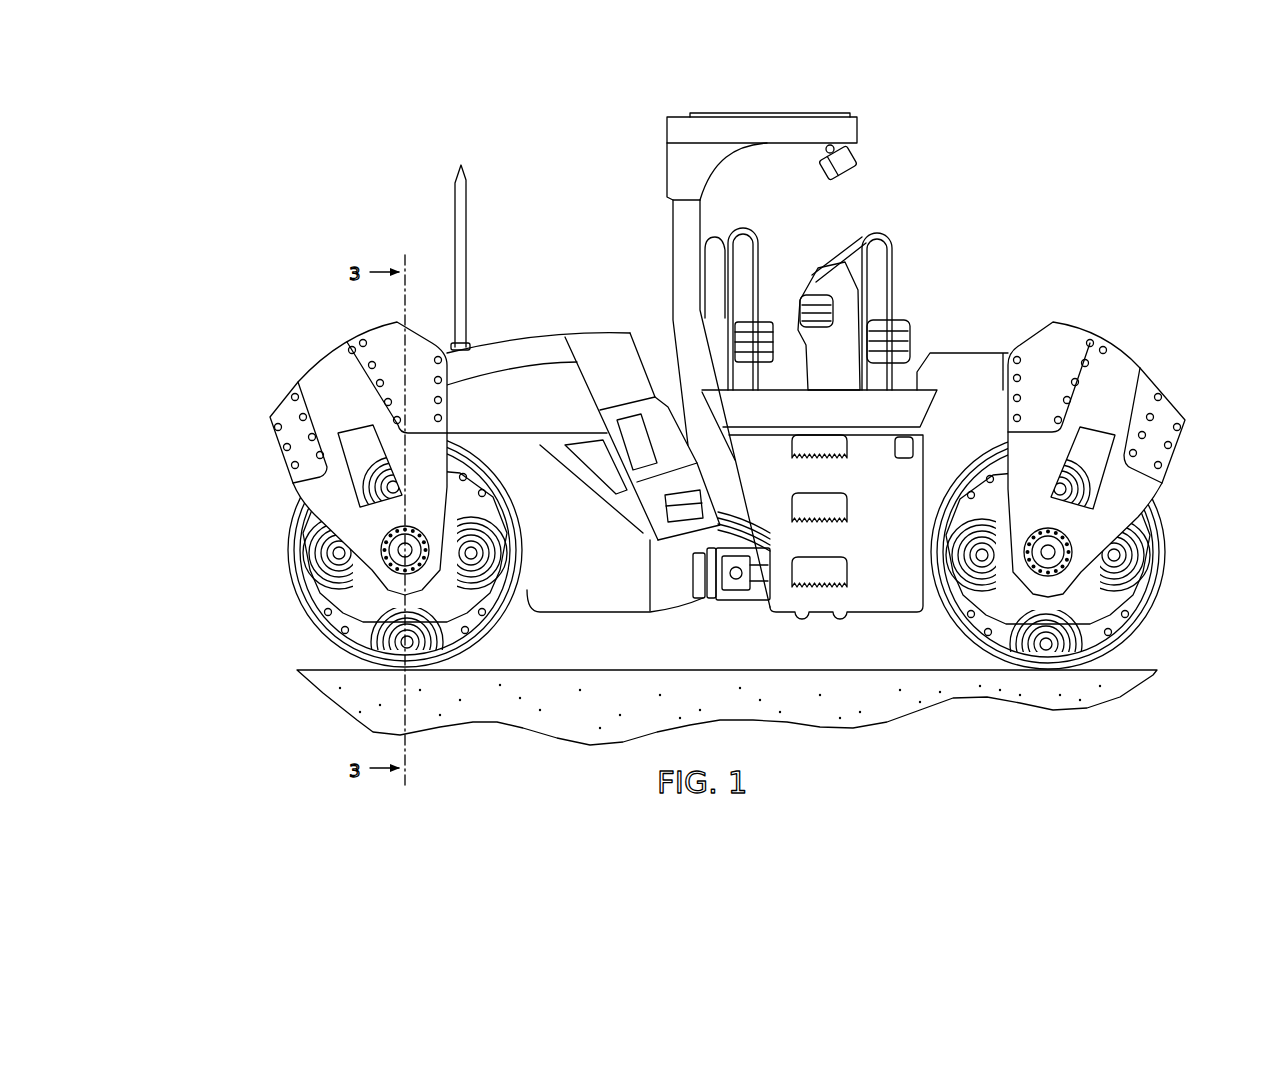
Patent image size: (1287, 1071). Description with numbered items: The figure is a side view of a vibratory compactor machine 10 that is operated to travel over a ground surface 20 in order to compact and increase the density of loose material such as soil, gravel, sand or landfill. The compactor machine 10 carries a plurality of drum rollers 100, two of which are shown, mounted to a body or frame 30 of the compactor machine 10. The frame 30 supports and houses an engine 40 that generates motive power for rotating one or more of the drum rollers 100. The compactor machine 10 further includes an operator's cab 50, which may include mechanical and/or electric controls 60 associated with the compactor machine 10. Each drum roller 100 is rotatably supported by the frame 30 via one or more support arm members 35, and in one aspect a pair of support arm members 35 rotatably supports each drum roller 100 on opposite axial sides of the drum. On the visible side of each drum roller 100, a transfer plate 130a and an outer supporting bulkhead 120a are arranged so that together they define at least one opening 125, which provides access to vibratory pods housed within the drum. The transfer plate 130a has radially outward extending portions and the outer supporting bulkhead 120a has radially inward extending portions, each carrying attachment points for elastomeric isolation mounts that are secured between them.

The compactor machine 10 is at (397, 86).
The ground surface 20 is at (1122, 689).
The frame 30 is at (977, 372).
The support arm member 35 is at (330, 372).
The engine 40 is at (533, 311).
The operator's cab 50 is at (869, 92).
The controls 60 is at (834, 229).
The drum roller 100 is at (292, 528).
The outer supporting bulkhead 120a is at (372, 650).
The opening 125 is at (444, 652).
The transfer plate 130a is at (362, 581).